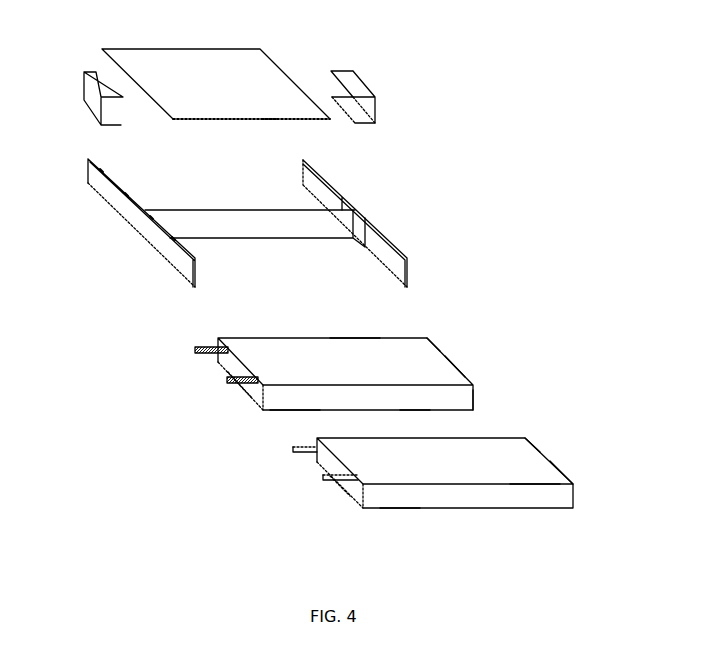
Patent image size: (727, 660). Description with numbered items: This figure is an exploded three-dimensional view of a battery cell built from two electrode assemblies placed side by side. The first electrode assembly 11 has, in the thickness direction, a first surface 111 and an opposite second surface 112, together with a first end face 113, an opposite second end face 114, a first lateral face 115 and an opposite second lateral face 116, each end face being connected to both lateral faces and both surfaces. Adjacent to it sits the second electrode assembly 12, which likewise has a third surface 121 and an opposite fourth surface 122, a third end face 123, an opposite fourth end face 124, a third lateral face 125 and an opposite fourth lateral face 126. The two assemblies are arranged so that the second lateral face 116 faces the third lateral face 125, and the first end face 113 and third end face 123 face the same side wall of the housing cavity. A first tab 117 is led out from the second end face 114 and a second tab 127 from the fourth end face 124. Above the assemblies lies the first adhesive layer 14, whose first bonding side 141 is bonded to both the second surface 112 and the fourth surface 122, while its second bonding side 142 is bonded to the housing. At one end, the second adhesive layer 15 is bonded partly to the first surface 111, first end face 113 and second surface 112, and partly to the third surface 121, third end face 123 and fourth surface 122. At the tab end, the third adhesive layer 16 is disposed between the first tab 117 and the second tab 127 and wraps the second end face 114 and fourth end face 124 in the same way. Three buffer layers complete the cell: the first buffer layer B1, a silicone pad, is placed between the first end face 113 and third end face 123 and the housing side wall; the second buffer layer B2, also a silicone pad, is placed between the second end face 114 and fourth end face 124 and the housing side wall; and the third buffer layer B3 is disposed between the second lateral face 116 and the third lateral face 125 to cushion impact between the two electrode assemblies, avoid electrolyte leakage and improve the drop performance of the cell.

The first electrode assembly 11 is at (410, 503).
The first surface 111 is at (400, 509).
The second surface 112 is at (529, 465).
The first end face 113 is at (565, 481).
The second end face 114 is at (340, 486).
The first lateral face 115 is at (531, 496).
The second lateral face 116 is at (414, 437).
The first tab 117 is at (294, 449).
The second electrode assembly 12 is at (268, 338).
The third surface 121 is at (469, 409).
The fourth surface 122 is at (432, 352).
The third end face 123 is at (459, 369).
The fourth end face 124 is at (248, 391).
The third lateral face 125 is at (297, 406).
The fourth lateral face 126 is at (346, 337).
The second tab 127 is at (194, 349).
The first adhesive layer 14 is at (217, 60).
The first bonding side 141 is at (179, 121).
The second bonding side 142 is at (268, 117).
The second adhesive layer 15 is at (355, 84).
The third adhesive layer 16 is at (85, 72).
The first buffer layer B1 is at (321, 175).
The second buffer layer B2 is at (102, 171).
The third buffer layer B3 is at (224, 224).